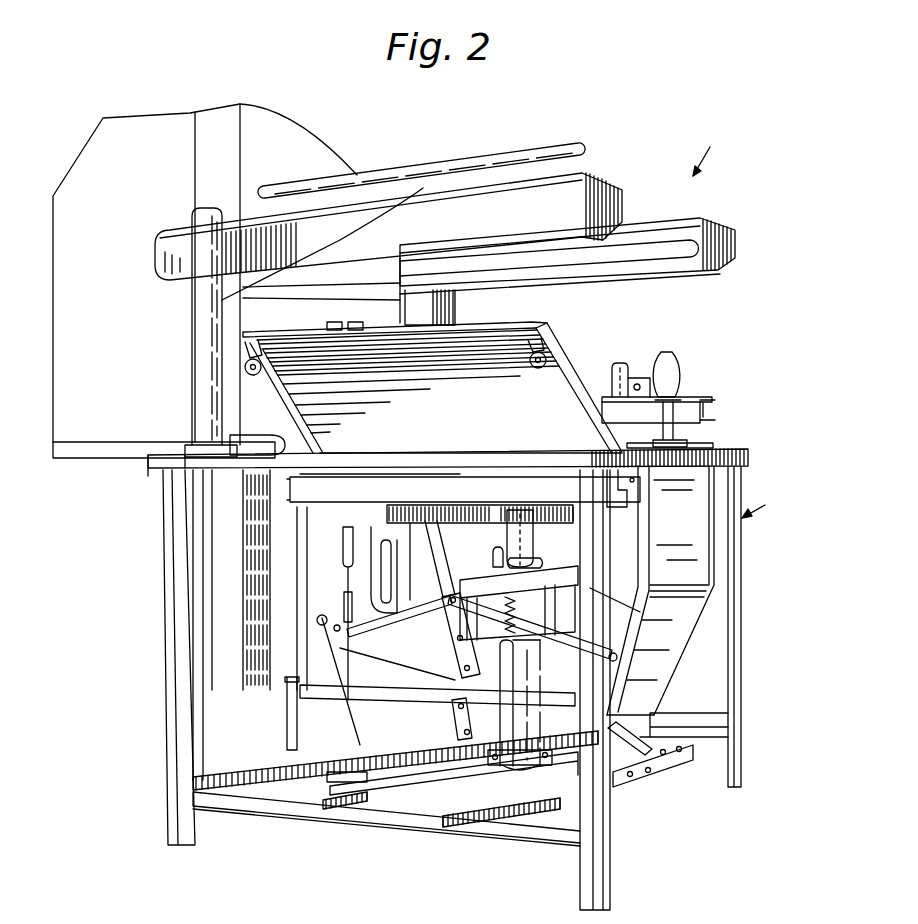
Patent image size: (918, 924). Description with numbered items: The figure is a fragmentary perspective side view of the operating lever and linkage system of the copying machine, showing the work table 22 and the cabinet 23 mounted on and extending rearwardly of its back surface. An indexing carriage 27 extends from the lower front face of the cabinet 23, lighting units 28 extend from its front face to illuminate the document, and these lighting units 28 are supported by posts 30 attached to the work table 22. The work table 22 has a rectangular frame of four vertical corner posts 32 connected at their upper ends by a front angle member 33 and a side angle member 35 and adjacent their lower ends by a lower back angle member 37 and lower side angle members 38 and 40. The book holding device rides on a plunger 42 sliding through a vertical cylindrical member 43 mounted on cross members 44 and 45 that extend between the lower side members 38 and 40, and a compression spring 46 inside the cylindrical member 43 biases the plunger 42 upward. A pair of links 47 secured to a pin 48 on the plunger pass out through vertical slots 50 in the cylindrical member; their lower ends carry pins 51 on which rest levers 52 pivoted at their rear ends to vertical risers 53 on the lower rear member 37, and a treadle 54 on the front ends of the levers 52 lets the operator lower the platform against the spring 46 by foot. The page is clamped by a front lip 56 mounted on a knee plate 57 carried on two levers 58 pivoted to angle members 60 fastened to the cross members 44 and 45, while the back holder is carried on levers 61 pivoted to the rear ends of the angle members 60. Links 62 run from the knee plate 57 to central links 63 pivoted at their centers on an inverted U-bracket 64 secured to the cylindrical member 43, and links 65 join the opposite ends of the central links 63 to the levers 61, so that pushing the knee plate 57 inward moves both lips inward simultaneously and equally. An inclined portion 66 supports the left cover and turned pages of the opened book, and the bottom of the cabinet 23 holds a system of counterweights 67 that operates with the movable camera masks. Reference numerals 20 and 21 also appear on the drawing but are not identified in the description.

The apparatus 20 is at (710, 149).
The rod 21 is at (341, 164).
The work table 22 is at (490, 626).
The cabinet 23 is at (122, 302).
The indexing carriage 27 is at (678, 398).
The light sources 28 is at (608, 192).
The posts 30 is at (192, 352).
The vertical corner posts 32 is at (170, 573).
The front angle member 33 is at (725, 451).
The side angle member 35 is at (178, 474).
The lower back angle member 37 is at (230, 796).
The lower side angle member 38 is at (360, 822).
The lower side angle member 40 is at (741, 722).
The plunger 42 is at (533, 531).
The vertical cylindrical member 43 is at (466, 801).
The cross member 44 is at (343, 815).
The cross member 45 is at (486, 810).
The compression spring 46 is at (542, 566).
The links 47 is at (513, 673).
The pin 48 is at (512, 590).
The vertical slots 50 is at (497, 590).
The pins 51 is at (503, 760).
The levers 52 is at (430, 676).
The vertical risers 53 is at (360, 662).
The treadle 54 is at (665, 762).
The front lip 56 is at (690, 447).
The knee plate 57 is at (672, 653).
The levers 58 is at (565, 780).
The angle members 60 is at (422, 795).
The levers 61 is at (307, 515).
The links 62 is at (609, 602).
The central links 63 is at (467, 666).
The inverted U-bracket 64 is at (496, 560).
The links 65 is at (335, 626).
The inclined portion 66 is at (500, 350).
The counterweights 67 is at (381, 560).